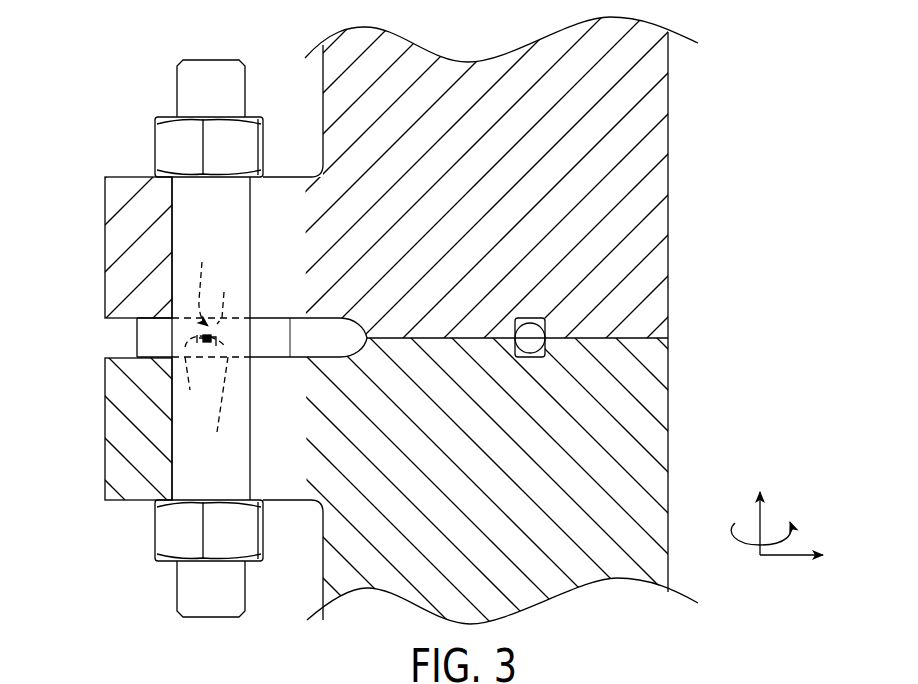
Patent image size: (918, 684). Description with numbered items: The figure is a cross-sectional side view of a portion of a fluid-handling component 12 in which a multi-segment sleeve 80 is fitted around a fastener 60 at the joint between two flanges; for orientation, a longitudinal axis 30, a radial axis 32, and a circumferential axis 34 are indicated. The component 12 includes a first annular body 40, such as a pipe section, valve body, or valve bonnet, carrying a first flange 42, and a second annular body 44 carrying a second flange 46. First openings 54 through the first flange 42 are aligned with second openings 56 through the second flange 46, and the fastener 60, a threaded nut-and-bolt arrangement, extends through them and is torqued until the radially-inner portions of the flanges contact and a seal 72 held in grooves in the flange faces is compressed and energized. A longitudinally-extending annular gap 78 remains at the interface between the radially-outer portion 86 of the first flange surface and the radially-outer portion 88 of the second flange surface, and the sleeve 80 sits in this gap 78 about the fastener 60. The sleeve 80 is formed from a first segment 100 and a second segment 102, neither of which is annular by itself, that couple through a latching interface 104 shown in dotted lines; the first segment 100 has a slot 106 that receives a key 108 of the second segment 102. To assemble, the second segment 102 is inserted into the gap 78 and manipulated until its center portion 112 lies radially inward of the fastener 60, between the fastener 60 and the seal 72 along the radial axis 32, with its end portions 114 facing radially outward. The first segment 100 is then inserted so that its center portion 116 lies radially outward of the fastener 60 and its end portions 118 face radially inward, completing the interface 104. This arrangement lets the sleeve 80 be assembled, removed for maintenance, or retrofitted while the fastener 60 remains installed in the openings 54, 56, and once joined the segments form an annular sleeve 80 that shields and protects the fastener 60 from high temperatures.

The fluid-handling component 12 is at (222, 31).
The longitudinal axis 30 is at (760, 520).
The radial axis 32 is at (783, 556).
The circumferential axis 34 is at (748, 540).
The first annular body 40 is at (280, 613).
The first flange 42 is at (105, 427).
The second annular body 44 is at (295, 82).
The second flange 46 is at (105, 214).
The first openings 54 is at (172, 435).
The second openings 56 is at (172, 265).
The fastener 60 is at (190, 190).
The seal 72 is at (523, 330).
The gap 78 is at (335, 355).
The sleeve 80 is at (85, 357).
The radially-outer portion of the first surface 86 is at (128, 360).
The radially-outer portion of the second surface 88 is at (125, 318).
The first segment 100 is at (143, 335).
The second segment 102 is at (270, 330).
The interface 104 is at (190, 302).
The slot 106 is at (201, 377).
The key 108 is at (215, 409).
The center portion of the second segment 112 is at (290, 338).
The end portions of the second segment 114 is at (204, 281).
The center portion of the first segment 116 is at (137, 333).
The end portions of the first segment 118 is at (225, 295).